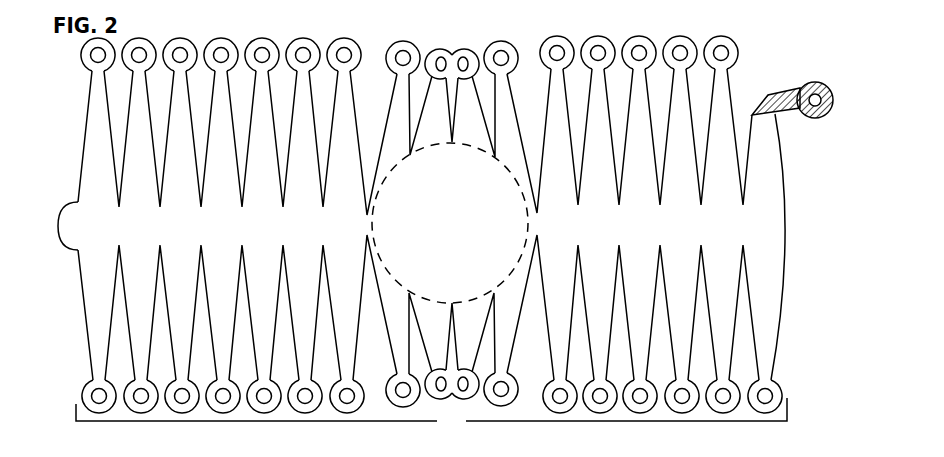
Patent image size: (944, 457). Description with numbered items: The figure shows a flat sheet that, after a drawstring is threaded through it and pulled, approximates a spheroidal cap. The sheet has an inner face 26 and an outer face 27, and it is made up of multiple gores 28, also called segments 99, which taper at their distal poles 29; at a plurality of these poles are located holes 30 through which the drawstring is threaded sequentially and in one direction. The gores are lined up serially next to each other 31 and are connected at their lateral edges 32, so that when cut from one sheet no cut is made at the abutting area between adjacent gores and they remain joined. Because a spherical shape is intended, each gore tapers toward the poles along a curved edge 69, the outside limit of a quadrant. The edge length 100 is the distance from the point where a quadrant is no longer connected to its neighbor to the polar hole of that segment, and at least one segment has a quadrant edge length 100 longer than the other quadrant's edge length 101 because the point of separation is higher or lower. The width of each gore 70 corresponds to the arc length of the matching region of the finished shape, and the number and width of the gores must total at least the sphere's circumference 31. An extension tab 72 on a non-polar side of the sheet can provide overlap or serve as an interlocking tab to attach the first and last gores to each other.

The curved edge 69 is at (81, 134).
The extension tab 72 is at (67, 238).
The edge length 100 is at (392, 75).
The other quadrant's edge length 101 is at (409, 150).
The segment 99 is at (516, 36).
The gore 28 is at (692, 28).
The hole 30 is at (724, 51).
The distal pole 29 is at (729, 70).
The inner face 26 is at (787, 95).
The outer face 27 is at (773, 145).
The width of gore 70 is at (612, 215).
The lateral edge 32 is at (745, 203).
The serial line-up of gores 31 is at (431, 416).